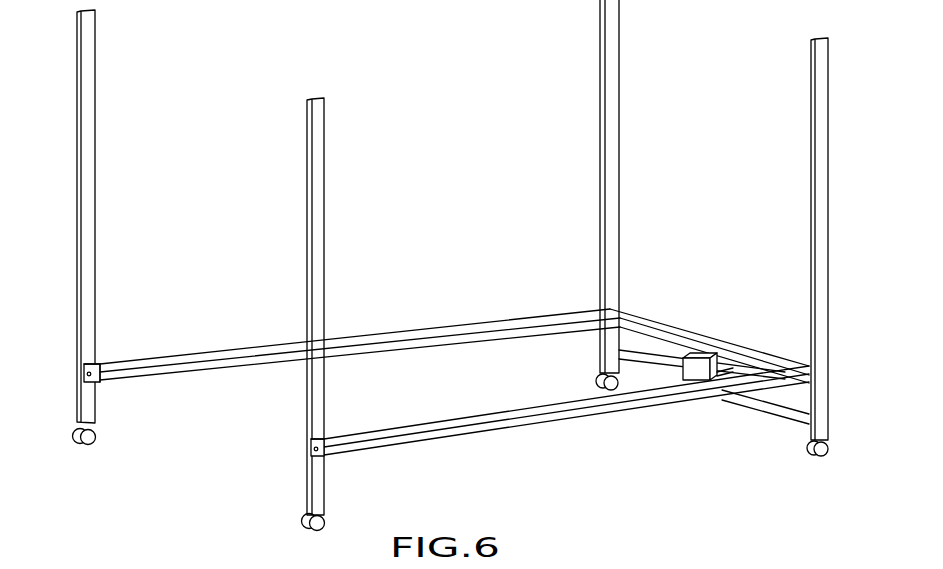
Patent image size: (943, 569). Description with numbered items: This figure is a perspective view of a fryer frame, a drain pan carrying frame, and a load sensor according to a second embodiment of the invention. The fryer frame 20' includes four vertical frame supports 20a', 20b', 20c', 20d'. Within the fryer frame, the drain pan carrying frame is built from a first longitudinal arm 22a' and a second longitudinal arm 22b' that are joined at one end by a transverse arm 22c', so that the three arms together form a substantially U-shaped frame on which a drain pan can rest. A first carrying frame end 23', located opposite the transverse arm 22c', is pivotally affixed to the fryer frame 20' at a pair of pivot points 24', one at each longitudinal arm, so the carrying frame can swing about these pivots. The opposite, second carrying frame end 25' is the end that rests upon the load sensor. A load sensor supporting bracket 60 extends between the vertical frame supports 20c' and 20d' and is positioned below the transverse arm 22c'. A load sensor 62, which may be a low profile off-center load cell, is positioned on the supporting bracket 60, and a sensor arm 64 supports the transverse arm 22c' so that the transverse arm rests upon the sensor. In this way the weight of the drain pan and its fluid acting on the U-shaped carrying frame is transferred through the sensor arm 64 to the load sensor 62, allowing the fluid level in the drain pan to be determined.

The fryer frame 20' is at (42, 228).
The vertical frame support 20a' is at (121, 227).
The vertical frame support 20b' is at (354, 314).
The vertical frame support 20c' is at (574, 195).
The vertical frame support 20d' is at (847, 247).
The first longitudinal arm 22a' is at (360, 319).
The second longitudinal arm 22b' is at (566, 426).
The transverse arm 22c' is at (709, 305).
The first carrying frame end 23' is at (251, 366).
The pivot point 24' is at (243, 435).
The second carrying frame end 25' is at (702, 400).
The load sensor supporting bracket 60 is at (750, 403).
The load sensor 62 is at (725, 368).
The sensor arm 64 is at (698, 357).